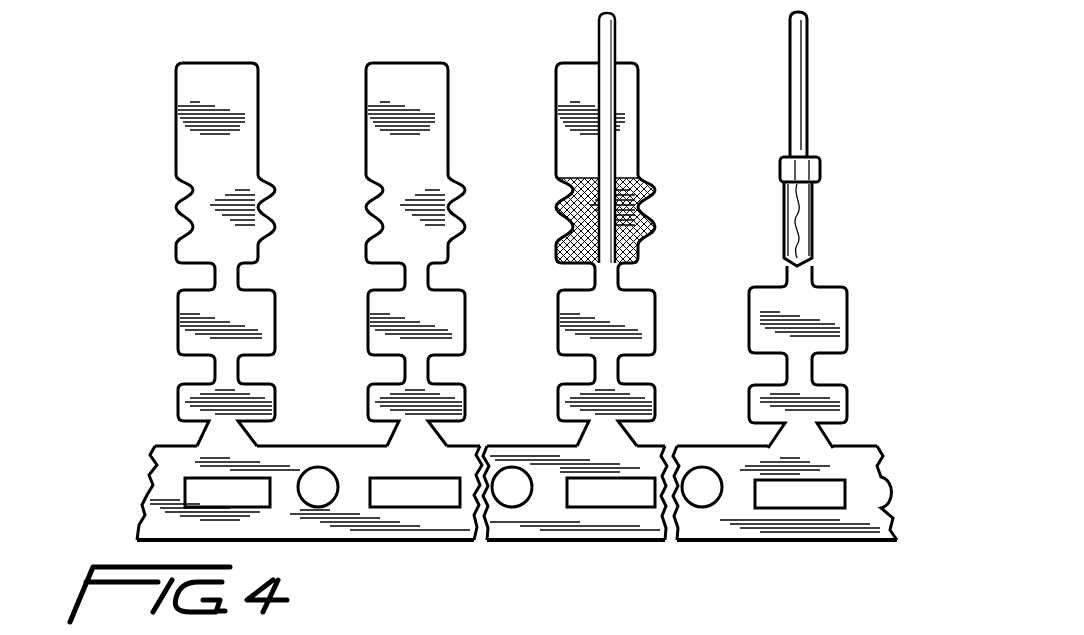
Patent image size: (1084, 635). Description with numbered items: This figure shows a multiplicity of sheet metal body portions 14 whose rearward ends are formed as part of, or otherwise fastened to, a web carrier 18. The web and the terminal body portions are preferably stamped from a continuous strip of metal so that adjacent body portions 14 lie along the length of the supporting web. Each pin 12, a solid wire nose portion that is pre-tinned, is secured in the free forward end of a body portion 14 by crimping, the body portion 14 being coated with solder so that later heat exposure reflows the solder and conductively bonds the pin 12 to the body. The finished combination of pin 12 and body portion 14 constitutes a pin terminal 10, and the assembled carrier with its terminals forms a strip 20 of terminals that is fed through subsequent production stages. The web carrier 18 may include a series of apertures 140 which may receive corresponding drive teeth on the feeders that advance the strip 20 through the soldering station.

The pin terminal 10 is at (837, 197).
The pin 12 is at (617, 50).
The sheet metal body portion 14 is at (262, 156).
The web carrier 18 is at (372, 542).
The strip of terminals 20 is at (798, 545).
The apertures 140 is at (530, 507).